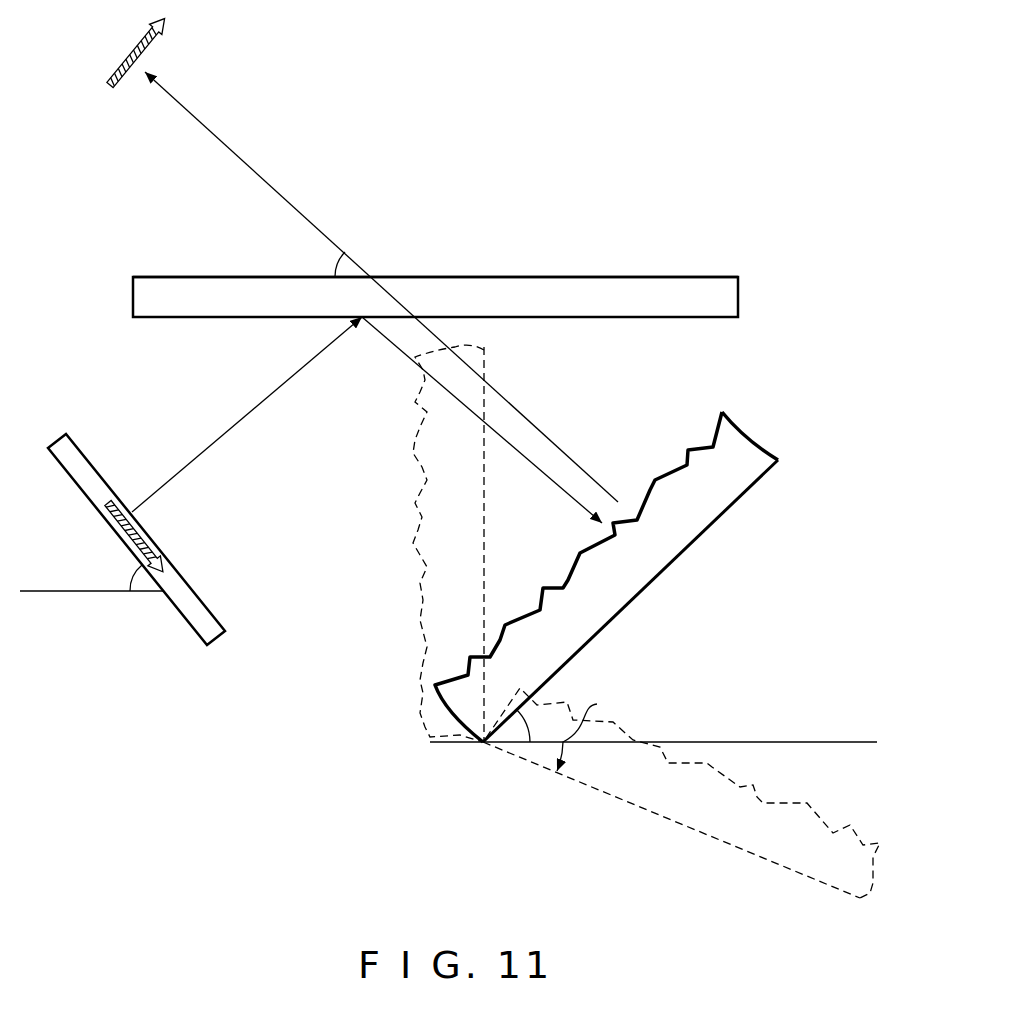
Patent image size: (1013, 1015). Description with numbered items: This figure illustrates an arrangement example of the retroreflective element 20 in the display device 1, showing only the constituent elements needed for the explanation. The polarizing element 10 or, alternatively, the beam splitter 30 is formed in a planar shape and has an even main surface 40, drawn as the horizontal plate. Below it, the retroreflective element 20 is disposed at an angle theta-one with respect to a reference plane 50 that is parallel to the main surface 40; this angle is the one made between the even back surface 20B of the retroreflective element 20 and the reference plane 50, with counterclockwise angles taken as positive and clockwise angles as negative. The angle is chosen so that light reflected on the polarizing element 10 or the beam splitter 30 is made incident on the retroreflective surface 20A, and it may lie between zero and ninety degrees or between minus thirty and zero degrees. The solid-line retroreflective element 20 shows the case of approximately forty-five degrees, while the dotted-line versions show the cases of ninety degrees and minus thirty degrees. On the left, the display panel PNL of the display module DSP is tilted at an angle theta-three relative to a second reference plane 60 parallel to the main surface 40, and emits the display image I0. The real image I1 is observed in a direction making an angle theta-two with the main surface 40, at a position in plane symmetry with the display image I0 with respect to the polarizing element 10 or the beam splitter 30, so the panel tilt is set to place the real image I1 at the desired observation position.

The display device 1 is at (522, 133).
The polarizing element 10 is at (496, 297).
The beam splitter 30 is at (730, 298).
The main surface 40 is at (623, 274).
The retroreflective element 20 is at (605, 627).
The retroreflective surface 20A is at (666, 473).
The back surface 20B is at (640, 600).
The reference plane 50 is at (821, 741).
The reference plane 60 is at (52, 589).
The display module DSP is at (148, 568).
The display panel PNL is at (213, 632).
The display image I0 is at (158, 551).
The real image I1 is at (156, 44).